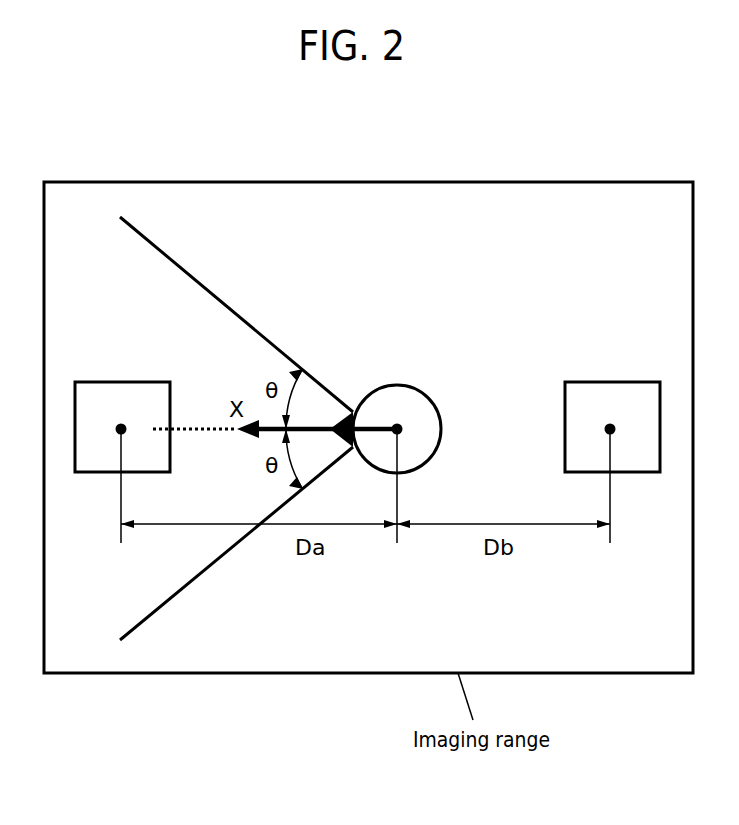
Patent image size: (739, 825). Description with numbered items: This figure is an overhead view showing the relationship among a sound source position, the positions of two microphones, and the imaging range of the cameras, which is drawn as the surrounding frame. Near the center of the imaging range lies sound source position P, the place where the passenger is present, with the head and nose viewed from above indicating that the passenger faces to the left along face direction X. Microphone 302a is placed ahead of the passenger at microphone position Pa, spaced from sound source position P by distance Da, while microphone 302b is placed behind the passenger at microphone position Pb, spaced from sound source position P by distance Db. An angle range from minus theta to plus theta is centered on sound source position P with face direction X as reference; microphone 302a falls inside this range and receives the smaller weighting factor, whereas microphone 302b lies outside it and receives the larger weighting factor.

The microphone 302a is at (90, 382).
The microphone 302b is at (578, 382).
The sound source position P is at (398, 428).
The microphone position Pa is at (125, 427).
The microphone position Pb is at (613, 427).